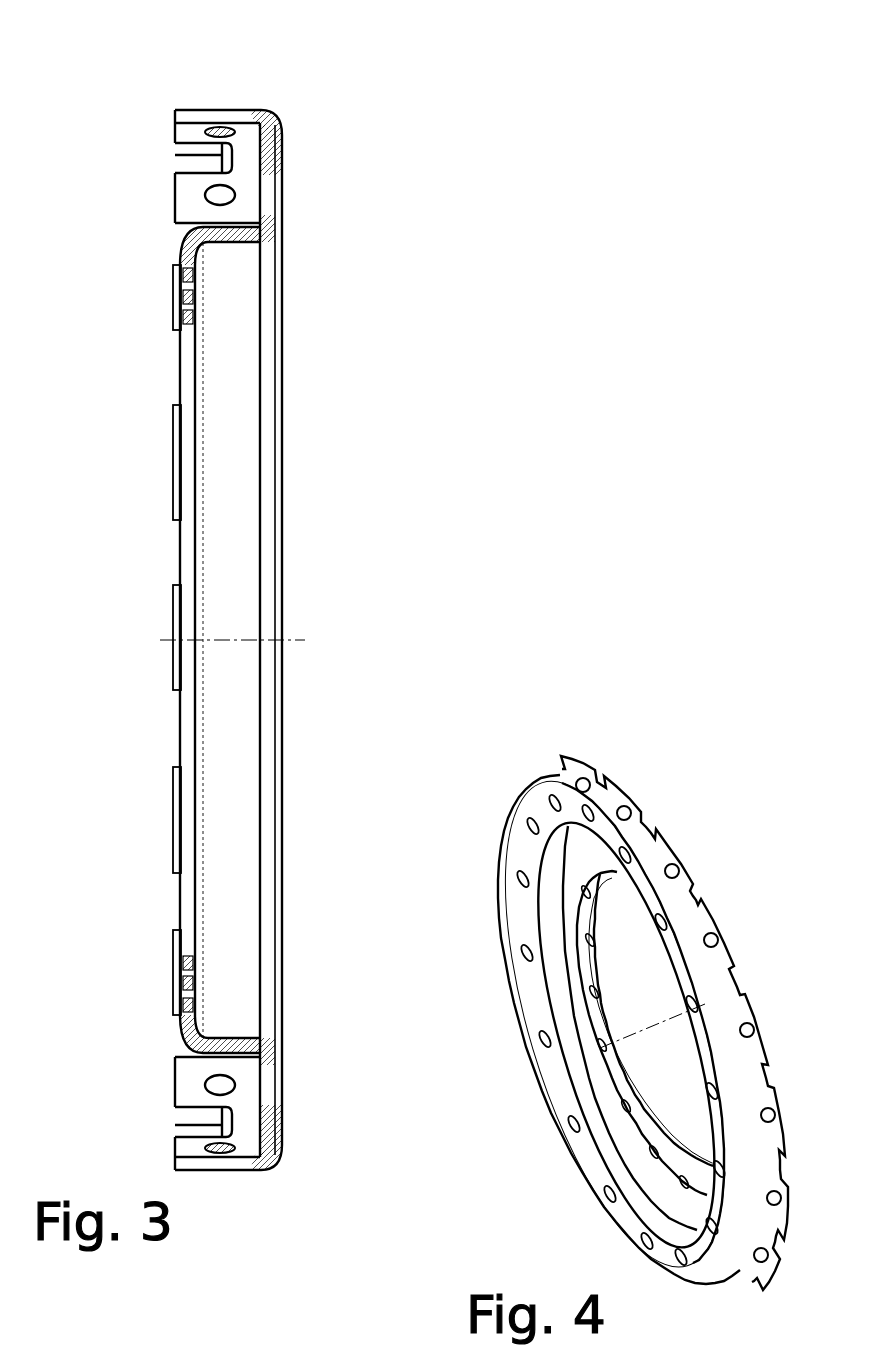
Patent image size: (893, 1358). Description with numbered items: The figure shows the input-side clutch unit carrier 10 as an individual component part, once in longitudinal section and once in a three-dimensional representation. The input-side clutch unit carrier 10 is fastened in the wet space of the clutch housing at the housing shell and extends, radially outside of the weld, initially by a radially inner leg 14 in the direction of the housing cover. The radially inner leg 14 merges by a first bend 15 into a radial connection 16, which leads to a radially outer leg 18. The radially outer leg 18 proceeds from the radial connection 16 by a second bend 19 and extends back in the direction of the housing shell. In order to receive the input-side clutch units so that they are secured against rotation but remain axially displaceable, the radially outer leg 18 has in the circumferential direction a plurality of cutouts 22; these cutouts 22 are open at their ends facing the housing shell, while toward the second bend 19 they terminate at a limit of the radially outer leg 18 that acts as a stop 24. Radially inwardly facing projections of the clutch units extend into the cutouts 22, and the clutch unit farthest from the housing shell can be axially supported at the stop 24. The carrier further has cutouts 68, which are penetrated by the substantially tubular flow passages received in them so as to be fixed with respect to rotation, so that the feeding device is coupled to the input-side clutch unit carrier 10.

In FIG. 3, the input-side clutch unit carrier 10 is at (213, 1028).
In FIG. 4, the input-side clutch unit carrier 10 is at (519, 781).
In FIG. 3, the radially inner leg 14 is at (235, 238).
In FIG. 4, the radially inner leg 14 is at (625, 1150).
In FIG. 3, the first bend 15 is at (262, 238).
In FIG. 4, the first bend 15 is at (562, 1040).
In FIG. 3, the radial connection 16 is at (278, 162).
In FIG. 4, the radial connection 16 is at (570, 1115).
In FIG. 3, the radially outer leg 18 is at (262, 107).
In FIG. 4, the radially outer leg 18 is at (757, 1110).
In FIG. 3, the second bend 19 is at (284, 125).
In FIG. 4, the second bend 19 is at (725, 1262).
In FIG. 3, the cutouts 22 is at (200, 157).
In FIG. 4, the cutouts 22 is at (735, 988).
In FIG. 3, the stop 24 is at (233, 108).
In FIG. 4, the stop 24 is at (705, 905).
In FIG. 3, the cutouts 68 is at (268, 200).
In FIG. 4, the cutouts 68 is at (515, 925).